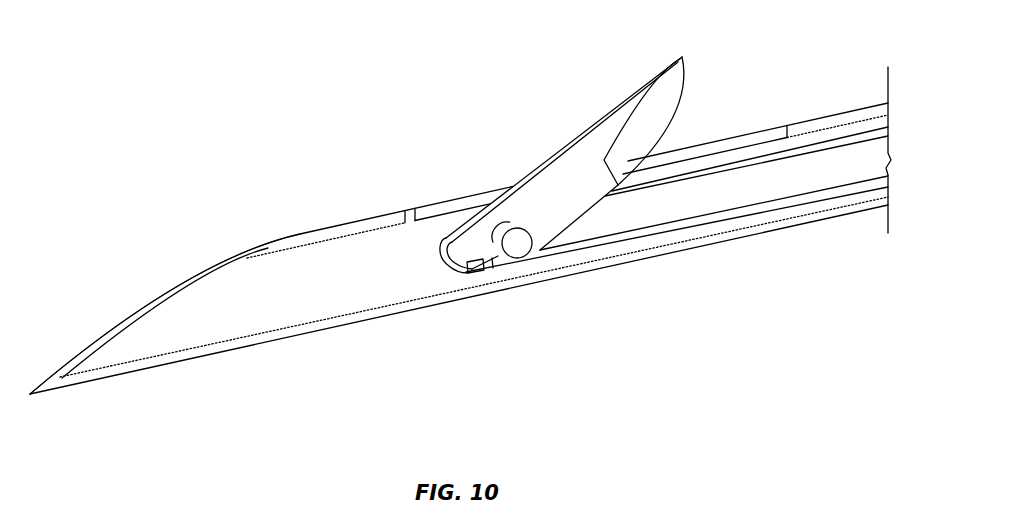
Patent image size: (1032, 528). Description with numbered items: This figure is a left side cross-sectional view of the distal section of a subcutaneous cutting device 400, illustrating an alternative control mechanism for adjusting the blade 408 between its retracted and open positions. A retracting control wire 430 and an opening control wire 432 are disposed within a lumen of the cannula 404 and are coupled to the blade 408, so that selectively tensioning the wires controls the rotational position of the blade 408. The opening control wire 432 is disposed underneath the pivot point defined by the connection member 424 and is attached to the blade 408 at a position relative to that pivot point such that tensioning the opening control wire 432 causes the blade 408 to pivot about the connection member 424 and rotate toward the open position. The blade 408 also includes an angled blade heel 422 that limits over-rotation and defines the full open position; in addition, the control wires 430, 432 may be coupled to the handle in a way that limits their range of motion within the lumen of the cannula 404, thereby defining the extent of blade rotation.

The cutting device 400 is at (173, 73).
The cannula 404 is at (287, 245).
The blade 408 is at (593, 150).
The angled blade heel 422 is at (468, 278).
The connection member 424 is at (515, 243).
The retracting control wire 430 is at (718, 173).
The opening control wire 432 is at (495, 265).